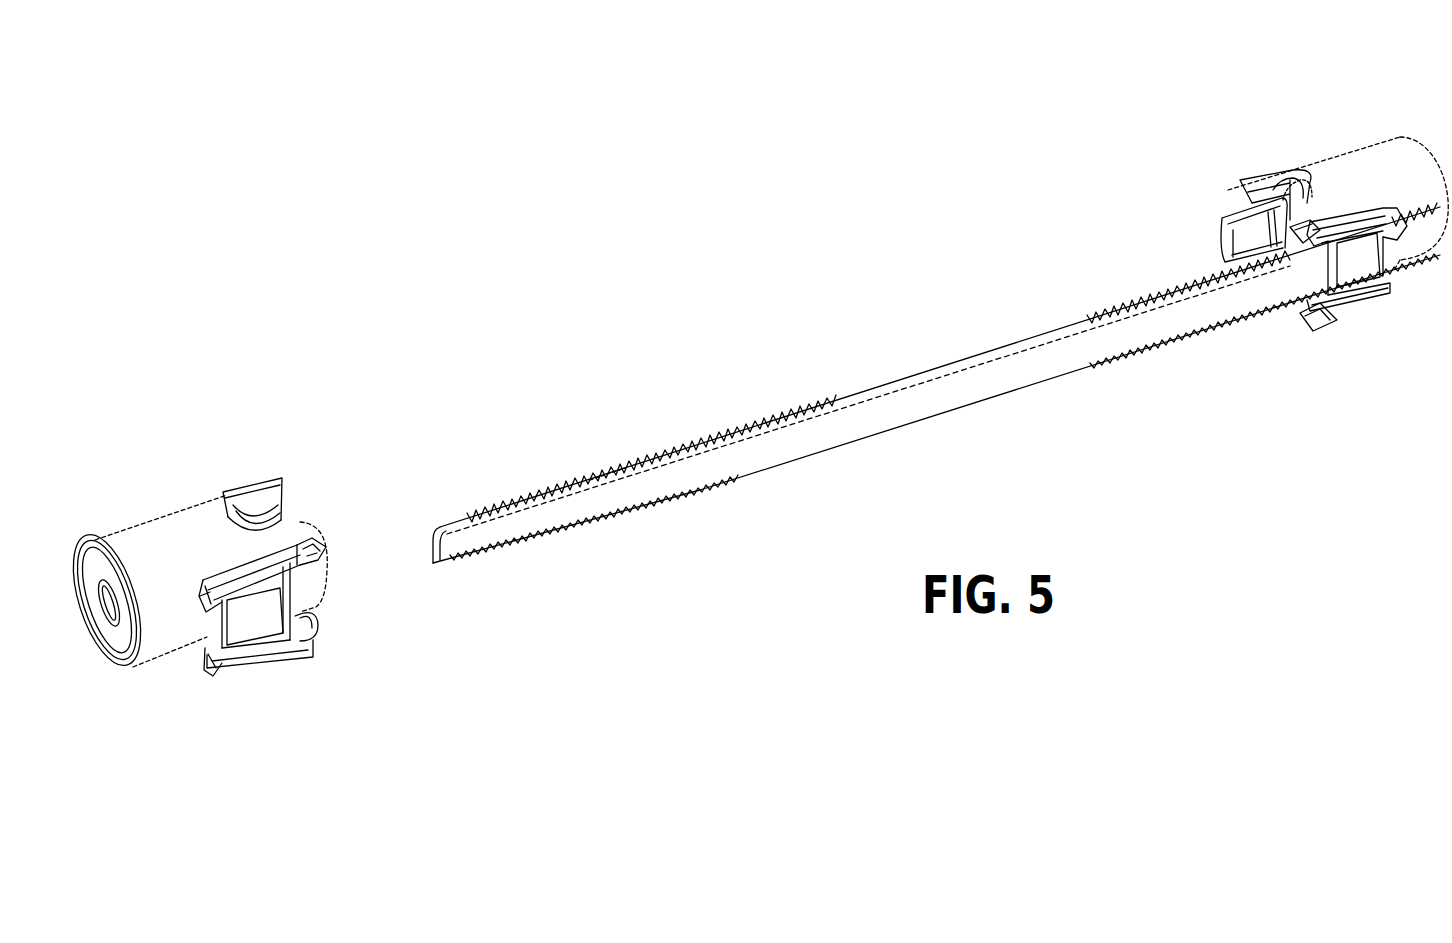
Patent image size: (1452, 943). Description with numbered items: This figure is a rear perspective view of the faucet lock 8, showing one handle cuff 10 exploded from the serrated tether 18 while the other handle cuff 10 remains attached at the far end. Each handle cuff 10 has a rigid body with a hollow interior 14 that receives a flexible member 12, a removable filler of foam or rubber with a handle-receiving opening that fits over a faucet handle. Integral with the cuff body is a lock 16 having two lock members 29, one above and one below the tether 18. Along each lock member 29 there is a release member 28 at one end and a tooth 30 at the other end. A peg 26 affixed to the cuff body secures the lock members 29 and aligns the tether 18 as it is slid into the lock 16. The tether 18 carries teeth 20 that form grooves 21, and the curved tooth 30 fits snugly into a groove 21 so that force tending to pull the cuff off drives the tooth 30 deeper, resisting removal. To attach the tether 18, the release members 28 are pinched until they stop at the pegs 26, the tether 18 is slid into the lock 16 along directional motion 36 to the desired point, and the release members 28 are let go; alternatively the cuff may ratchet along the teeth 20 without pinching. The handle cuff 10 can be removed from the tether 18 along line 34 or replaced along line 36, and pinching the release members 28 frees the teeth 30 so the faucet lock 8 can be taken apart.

The faucet lock 8 is at (930, 297).
The handle cuff 10 is at (152, 535).
The flexible member 12 is at (102, 568).
The hollow interior 14 is at (1237, 242).
The lock 16 is at (268, 630).
The tether 18 is at (897, 394).
The teeth 20 is at (670, 445).
The grooves 21 is at (606, 475).
The peg 26 is at (1289, 232).
The release member 28 is at (284, 548).
The lock member 29 is at (251, 563).
The tooth 30 is at (207, 583).
The line 34 is at (510, 479).
The directional motion 36 is at (447, 531).